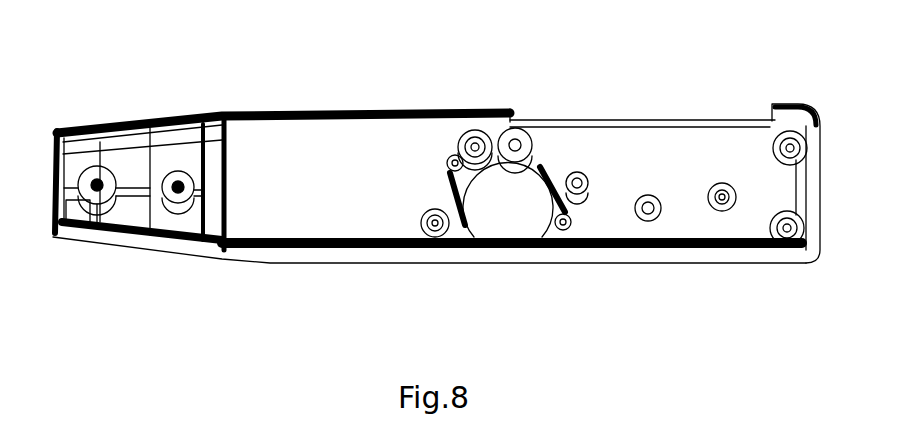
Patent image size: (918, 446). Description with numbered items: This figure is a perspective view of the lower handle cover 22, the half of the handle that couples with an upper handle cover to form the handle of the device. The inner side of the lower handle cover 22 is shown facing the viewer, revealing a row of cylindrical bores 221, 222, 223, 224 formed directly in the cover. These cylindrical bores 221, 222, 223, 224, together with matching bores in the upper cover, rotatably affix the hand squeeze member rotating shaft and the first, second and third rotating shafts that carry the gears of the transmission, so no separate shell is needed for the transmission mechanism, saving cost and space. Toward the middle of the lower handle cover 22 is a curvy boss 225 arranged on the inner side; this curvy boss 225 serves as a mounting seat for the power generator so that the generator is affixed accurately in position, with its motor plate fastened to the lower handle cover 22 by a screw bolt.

The lower handle cover 22 is at (380, 255).
The cylindrical bore 221 is at (512, 138).
The cylindrical bore 222 is at (724, 185).
The cylindrical bore 223 is at (648, 197).
The cylindrical bore 224 is at (575, 172).
The curvy boss 225 is at (493, 238).